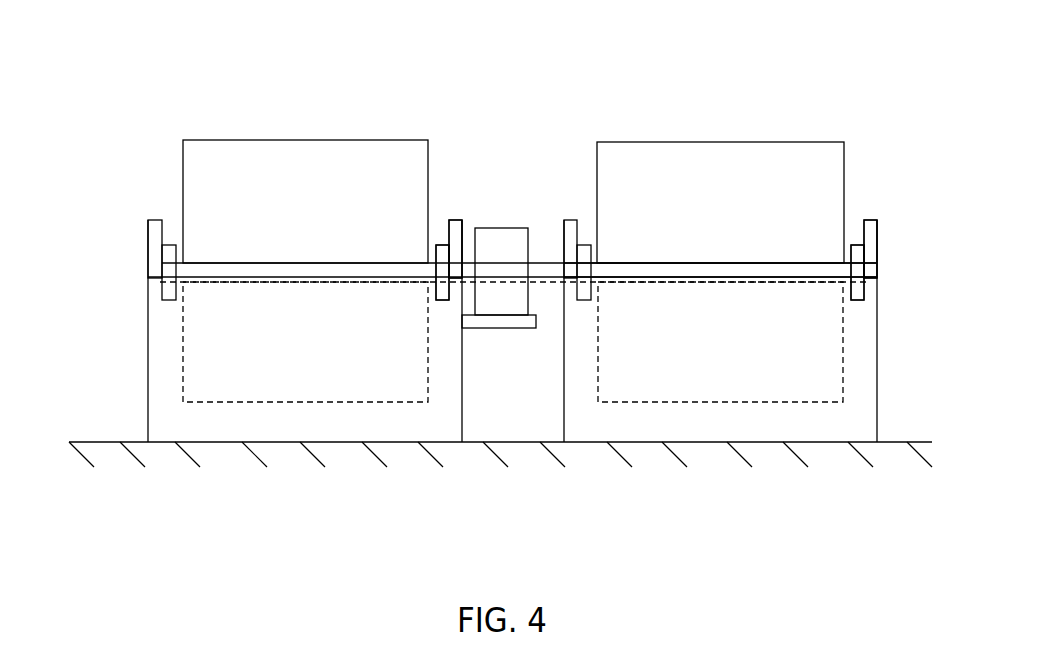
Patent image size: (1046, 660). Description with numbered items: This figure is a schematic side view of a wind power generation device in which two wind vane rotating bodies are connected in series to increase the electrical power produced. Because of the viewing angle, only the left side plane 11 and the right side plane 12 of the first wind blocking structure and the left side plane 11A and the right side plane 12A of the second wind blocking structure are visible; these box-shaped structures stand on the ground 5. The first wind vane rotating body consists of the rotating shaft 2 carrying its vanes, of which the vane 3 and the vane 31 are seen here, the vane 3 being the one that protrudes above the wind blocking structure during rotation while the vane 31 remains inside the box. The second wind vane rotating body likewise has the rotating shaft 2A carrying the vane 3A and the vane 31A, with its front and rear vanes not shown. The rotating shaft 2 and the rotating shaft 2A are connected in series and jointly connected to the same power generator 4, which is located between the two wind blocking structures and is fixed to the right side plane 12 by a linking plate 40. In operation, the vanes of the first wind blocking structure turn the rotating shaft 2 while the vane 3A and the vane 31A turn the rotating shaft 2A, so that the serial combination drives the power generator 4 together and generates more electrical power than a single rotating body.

The rotating shaft 2 is at (311, 272).
The rotating shaft 2A is at (734, 272).
The vane 3 is at (293, 152).
The vane 3A is at (724, 142).
The power generator 4 is at (500, 228).
The linking plate 40 is at (497, 329).
The ground 5 is at (907, 442).
The left side plane 11 is at (148, 330).
The left side plane 11A is at (564, 362).
The right side plane 12 is at (462, 221).
The right side plane 12A is at (877, 221).
The vane 31 is at (305, 397).
The vane 31A is at (725, 397).